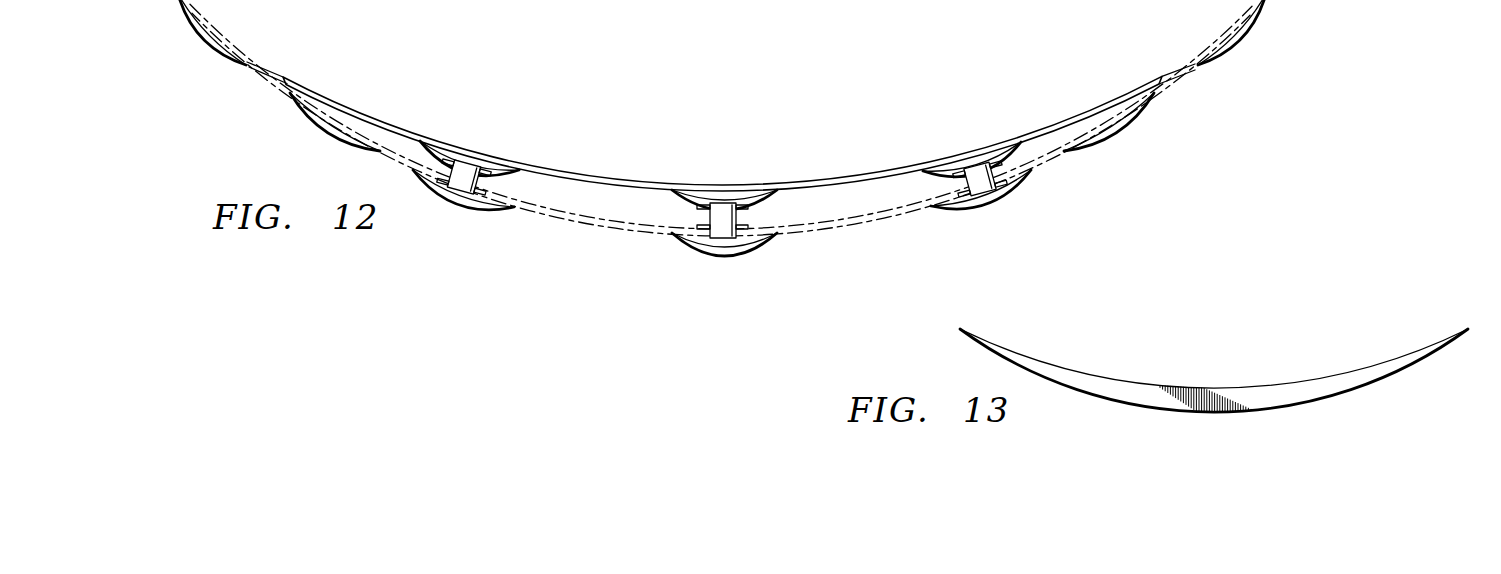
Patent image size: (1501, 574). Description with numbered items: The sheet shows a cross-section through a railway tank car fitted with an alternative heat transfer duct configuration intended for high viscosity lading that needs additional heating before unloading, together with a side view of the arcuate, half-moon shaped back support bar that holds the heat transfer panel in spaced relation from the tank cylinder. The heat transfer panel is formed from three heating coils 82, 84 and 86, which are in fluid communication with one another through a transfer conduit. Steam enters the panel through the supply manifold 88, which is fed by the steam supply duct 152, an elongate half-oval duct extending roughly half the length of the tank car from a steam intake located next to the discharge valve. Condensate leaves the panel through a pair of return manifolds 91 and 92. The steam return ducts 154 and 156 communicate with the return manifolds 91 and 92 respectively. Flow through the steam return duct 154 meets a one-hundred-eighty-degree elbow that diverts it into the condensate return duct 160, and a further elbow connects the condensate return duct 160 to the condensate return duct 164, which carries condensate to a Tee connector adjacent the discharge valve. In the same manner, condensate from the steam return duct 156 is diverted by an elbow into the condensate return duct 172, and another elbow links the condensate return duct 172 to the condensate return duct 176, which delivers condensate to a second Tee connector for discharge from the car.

The heating coil 82 is at (470, 162).
The heating coil 84 is at (723, 197).
The heating coil 86 is at (975, 162).
The supply manifold 88 is at (717, 217).
The return manifold 91 is at (463, 187).
The return manifold 92 is at (981, 191).
The steam supply duct 152 is at (721, 247).
The steam return duct 154 is at (490, 207).
The steam return duct 156 is at (955, 205).
The condensate return duct 160 is at (328, 128).
The condensate return duct 164 is at (212, 38).
The condensate return duct 172 is at (1117, 130).
The condensate return duct 176 is at (1234, 38).